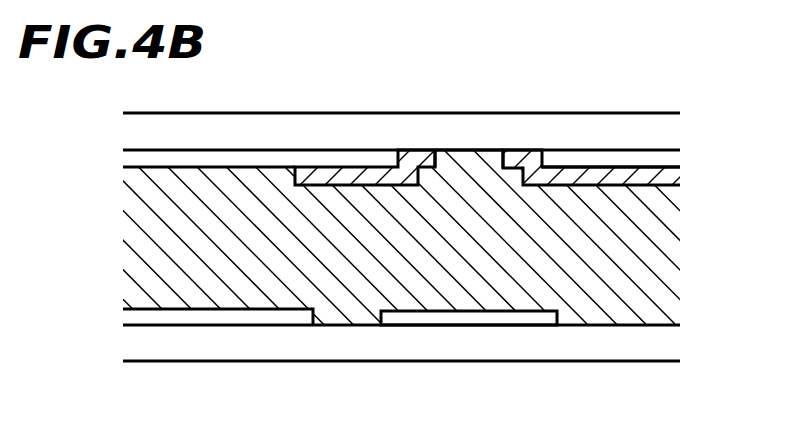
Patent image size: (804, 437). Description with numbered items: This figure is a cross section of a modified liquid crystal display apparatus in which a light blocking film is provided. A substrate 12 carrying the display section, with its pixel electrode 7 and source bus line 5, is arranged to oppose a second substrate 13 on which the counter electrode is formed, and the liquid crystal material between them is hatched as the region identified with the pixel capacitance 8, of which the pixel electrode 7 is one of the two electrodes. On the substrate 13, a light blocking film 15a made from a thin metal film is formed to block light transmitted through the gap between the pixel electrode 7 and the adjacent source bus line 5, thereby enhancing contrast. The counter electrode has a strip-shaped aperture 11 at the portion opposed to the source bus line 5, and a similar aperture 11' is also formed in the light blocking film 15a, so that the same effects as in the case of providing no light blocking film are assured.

The substrate 13 is at (695, 169).
The light blocking film 15a is at (420, 153).
The aperture 11 is at (469, 112).
The aperture 11' is at (486, 105).
The pixel capacitance 8 is at (655, 257).
The pixel electrode 7 is at (215, 319).
The source bus line 5 is at (478, 322).
The substrate 12 is at (686, 303).